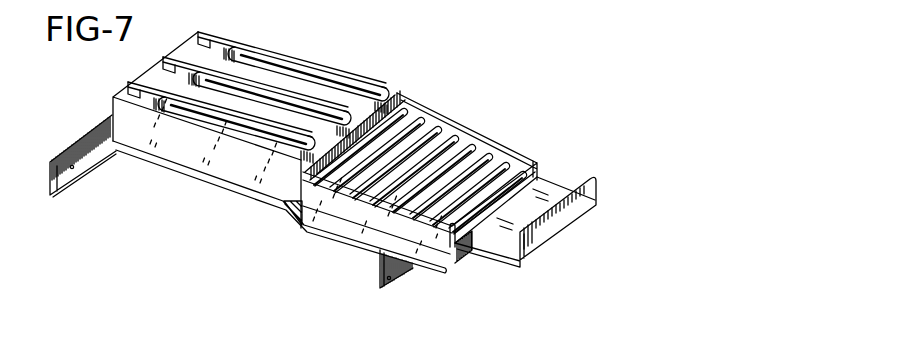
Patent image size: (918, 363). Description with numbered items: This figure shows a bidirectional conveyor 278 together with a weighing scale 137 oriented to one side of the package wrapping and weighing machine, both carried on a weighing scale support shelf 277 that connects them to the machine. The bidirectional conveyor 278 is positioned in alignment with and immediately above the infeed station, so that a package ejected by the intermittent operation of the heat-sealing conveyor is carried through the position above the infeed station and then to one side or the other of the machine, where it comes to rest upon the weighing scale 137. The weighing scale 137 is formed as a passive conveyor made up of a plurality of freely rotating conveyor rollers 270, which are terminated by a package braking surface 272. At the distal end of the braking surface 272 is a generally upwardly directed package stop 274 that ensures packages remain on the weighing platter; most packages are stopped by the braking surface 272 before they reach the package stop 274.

The bidirectional conveyor 278 is at (308, 46).
The conveyor rollers 270 is at (476, 152).
The package braking surface 272 is at (548, 188).
The package stop 274 is at (594, 194).
The weighing scale support shelf 277 is at (313, 239).
The weighing scale 137 is at (450, 263).